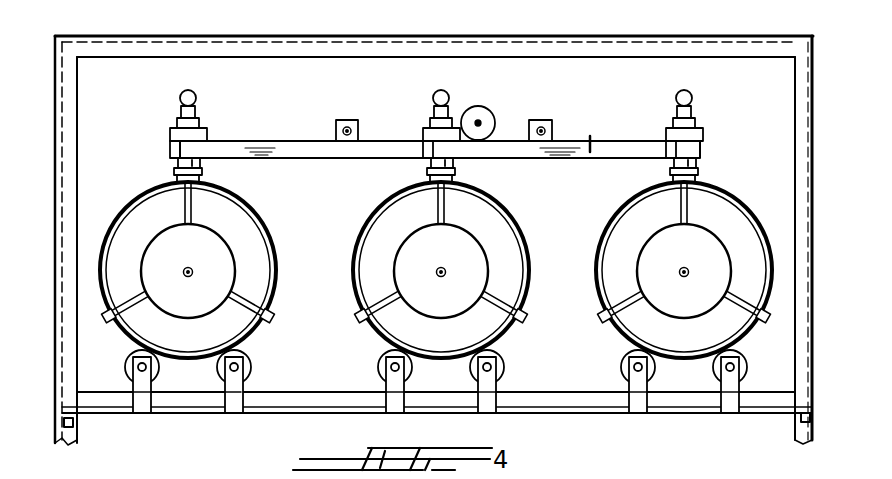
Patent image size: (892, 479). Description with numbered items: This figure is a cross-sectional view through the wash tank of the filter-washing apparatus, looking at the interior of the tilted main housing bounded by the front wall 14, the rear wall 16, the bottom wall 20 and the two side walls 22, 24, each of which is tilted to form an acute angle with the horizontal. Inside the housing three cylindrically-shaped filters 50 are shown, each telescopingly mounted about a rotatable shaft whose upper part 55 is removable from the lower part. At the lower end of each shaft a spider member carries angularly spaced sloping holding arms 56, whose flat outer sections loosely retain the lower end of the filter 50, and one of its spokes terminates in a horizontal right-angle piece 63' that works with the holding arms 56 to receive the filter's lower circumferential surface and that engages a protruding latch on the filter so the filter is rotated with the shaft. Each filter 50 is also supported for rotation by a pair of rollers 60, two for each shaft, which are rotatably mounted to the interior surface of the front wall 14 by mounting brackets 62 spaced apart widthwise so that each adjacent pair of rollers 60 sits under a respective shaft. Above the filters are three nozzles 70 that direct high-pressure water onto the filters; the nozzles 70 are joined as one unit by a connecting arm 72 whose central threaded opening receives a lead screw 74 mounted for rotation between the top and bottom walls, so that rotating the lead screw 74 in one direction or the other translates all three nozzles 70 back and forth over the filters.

The front wall 14 is at (555, 415).
The rear wall 16 is at (408, 36).
The bottom wall 20 is at (280, 104).
The side wall 22 is at (55, 209).
The side wall 24 is at (815, 153).
The cylindrical filter 50 is at (245, 199).
The upper part of shaft 55 is at (200, 259).
The holding arm 56 is at (132, 300).
The roller 60 is at (125, 369).
The mounting bracket 62 is at (143, 397).
The right-angle piece 63' is at (401, 177).
The nozzle 70 is at (170, 170).
The connecting arm 72 is at (590, 145).
The lead screw 74 is at (479, 122).